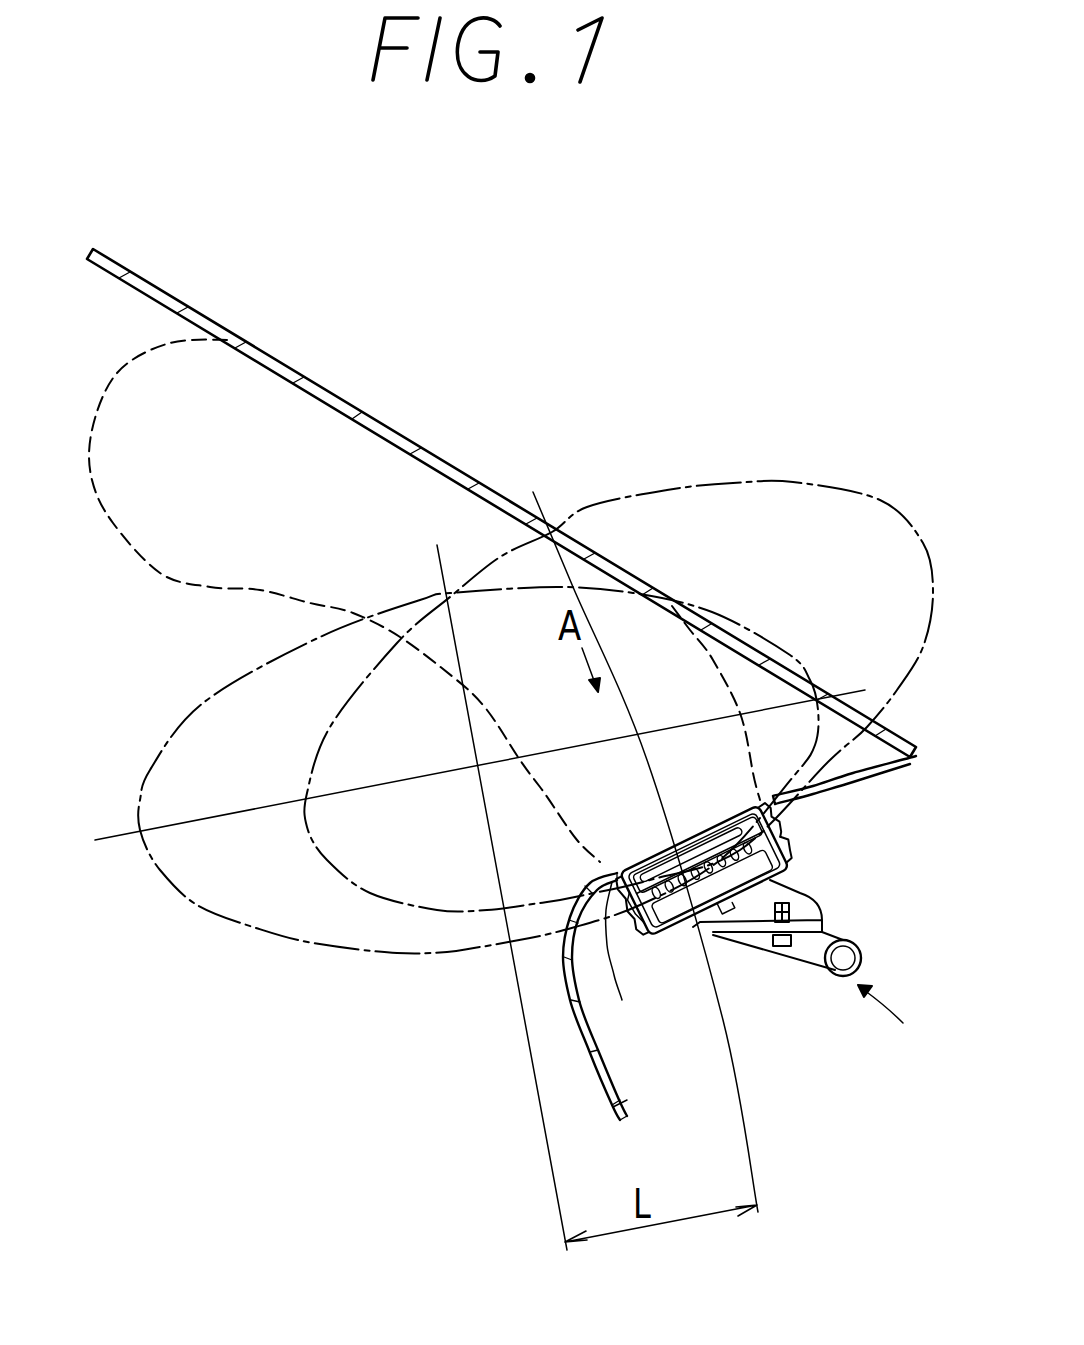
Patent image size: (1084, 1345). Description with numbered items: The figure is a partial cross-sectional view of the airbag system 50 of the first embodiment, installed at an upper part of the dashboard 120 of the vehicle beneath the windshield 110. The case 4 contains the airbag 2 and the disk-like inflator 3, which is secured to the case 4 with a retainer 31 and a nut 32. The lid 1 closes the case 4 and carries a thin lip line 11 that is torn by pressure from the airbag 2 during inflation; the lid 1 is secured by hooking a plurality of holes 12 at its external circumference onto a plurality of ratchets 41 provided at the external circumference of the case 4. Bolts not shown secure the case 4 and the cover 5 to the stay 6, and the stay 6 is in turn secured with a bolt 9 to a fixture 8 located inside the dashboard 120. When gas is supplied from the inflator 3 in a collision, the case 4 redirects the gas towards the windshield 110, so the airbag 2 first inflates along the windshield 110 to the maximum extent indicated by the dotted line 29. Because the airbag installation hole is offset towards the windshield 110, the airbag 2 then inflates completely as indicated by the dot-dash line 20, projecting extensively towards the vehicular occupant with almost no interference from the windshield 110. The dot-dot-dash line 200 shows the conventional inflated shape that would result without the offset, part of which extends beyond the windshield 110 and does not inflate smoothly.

The lid 1 is at (648, 870).
The airbag 2 is at (738, 822).
The inflator 3 is at (703, 841).
The case 4 is at (643, 921).
The ratchets 41 is at (627, 924).
The cover 5 is at (670, 941).
The stay 6 is at (813, 910).
The fixture 8 is at (853, 941).
The bolt 9 is at (783, 947).
The thin lip line 11 is at (615, 862).
The holes 12 is at (570, 975).
The dashboard 120 is at (604, 1093).
The windshield 110 is at (455, 474).
The dot-dash line 20 is at (207, 703).
The dotted line 29 is at (117, 537).
The dot-dot-dash line 200 is at (790, 481).
The retainer 31 is at (773, 833).
The nut 32 is at (783, 857).
The airbag system 50 is at (892, 1025).